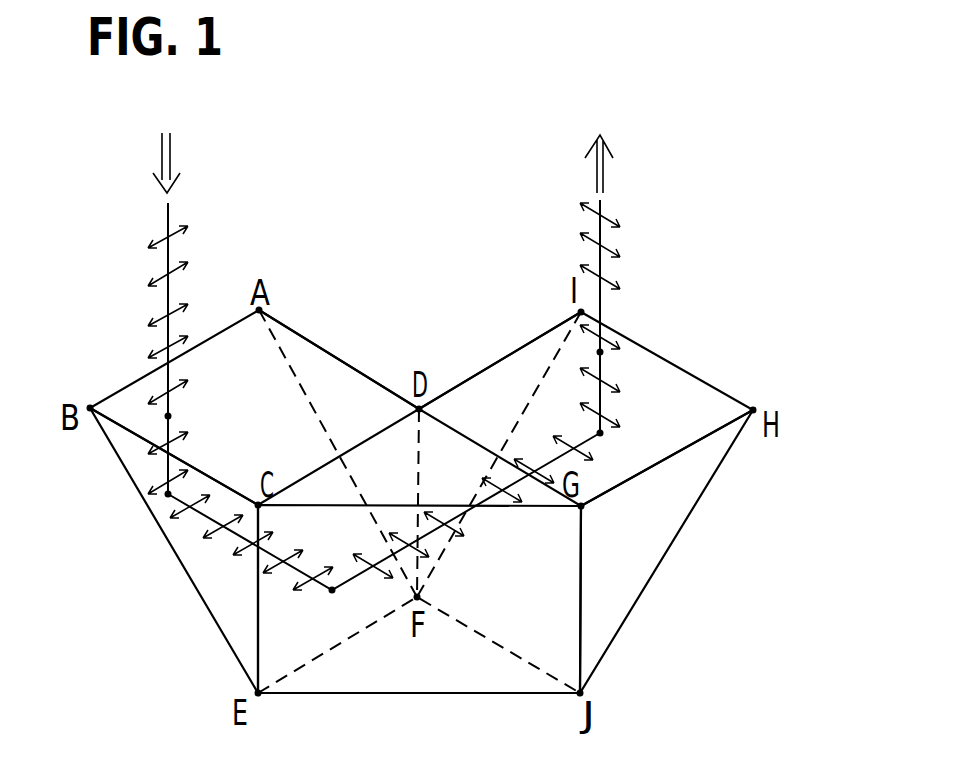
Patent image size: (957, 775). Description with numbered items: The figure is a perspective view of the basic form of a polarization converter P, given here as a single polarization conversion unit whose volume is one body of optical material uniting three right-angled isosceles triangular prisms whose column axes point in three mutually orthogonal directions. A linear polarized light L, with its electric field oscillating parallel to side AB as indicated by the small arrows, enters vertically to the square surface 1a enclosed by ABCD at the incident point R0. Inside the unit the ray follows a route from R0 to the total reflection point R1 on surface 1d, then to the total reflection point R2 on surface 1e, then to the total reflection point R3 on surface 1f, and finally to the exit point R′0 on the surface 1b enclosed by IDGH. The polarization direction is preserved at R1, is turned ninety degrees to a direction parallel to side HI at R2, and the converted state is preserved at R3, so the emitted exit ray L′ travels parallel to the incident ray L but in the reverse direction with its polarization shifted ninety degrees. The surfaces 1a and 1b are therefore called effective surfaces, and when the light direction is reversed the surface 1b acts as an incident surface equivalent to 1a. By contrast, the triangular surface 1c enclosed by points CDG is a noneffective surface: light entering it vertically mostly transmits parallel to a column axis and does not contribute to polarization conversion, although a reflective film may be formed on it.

The surface 1a is at (137, 389).
The surface 1b is at (672, 375).
The triangular surface 1c is at (388, 438).
The surface 1d is at (227, 607).
The surface 1e is at (447, 675).
The surface 1f is at (617, 596).
The linear polarized light L is at (168, 292).
The exit ray L′ is at (600, 262).
The incident point R0 is at (164, 416).
The exit point R′0 is at (604, 353).
The total reflection point R1 is at (168, 494).
The total reflection point R2 is at (332, 592).
The total reflection point R3 is at (600, 433).
The polarization converter P is at (404, 209).